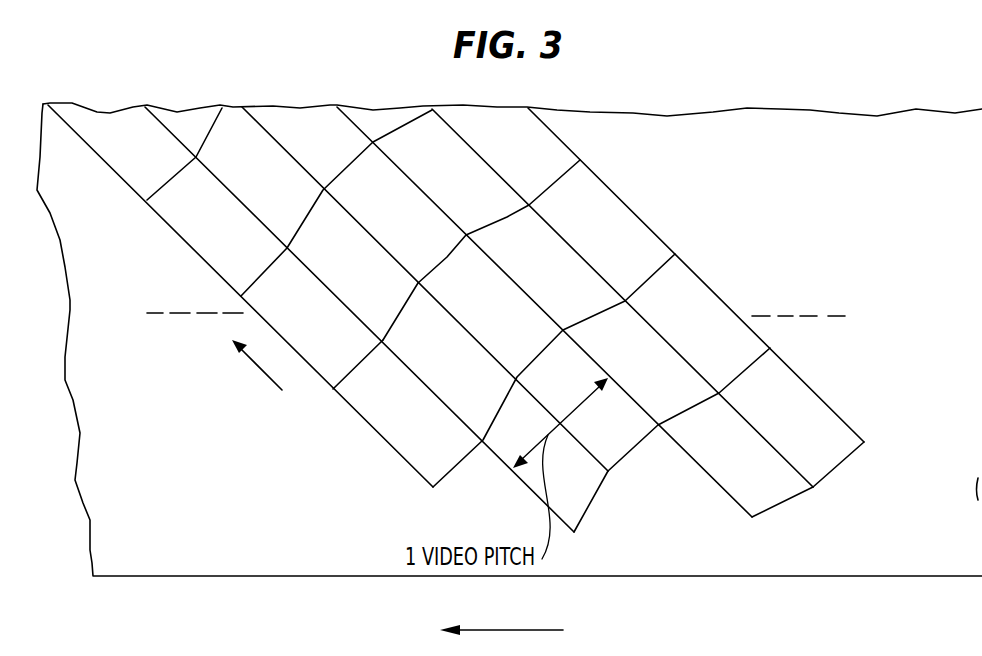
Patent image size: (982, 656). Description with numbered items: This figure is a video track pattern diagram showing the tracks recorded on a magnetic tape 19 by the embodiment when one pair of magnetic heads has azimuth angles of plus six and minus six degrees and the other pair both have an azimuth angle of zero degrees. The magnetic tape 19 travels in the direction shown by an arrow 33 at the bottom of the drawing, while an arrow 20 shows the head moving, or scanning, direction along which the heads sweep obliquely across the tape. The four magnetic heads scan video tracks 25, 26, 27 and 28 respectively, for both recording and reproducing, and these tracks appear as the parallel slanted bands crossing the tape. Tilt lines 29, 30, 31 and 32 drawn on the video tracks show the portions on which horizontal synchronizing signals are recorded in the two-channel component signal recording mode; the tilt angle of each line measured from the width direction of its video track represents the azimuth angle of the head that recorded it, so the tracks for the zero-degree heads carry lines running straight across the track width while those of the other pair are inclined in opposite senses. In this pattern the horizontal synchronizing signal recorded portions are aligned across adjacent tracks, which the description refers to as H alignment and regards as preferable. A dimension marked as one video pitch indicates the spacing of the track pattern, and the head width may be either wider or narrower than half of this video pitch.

The magnetic tape 19 is at (235, 577).
The arrow 20 is at (260, 368).
The video track 25 is at (592, 498).
The video track 26 is at (640, 442).
The video track 27 is at (788, 499).
The video track 28 is at (838, 466).
The tilt line 29 is at (403, 307).
The tilt line 30 is at (448, 257).
The tilt line 31 is at (507, 217).
The tilt line 32 is at (562, 177).
The arrow 33 is at (563, 630).